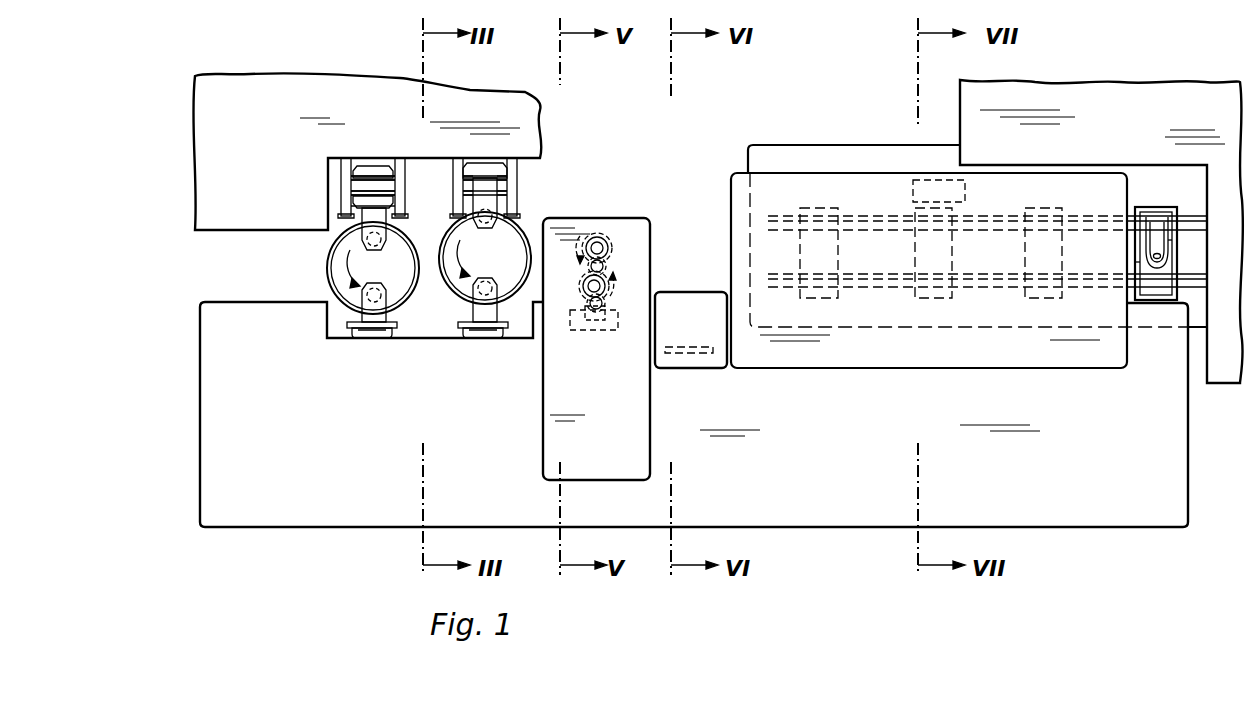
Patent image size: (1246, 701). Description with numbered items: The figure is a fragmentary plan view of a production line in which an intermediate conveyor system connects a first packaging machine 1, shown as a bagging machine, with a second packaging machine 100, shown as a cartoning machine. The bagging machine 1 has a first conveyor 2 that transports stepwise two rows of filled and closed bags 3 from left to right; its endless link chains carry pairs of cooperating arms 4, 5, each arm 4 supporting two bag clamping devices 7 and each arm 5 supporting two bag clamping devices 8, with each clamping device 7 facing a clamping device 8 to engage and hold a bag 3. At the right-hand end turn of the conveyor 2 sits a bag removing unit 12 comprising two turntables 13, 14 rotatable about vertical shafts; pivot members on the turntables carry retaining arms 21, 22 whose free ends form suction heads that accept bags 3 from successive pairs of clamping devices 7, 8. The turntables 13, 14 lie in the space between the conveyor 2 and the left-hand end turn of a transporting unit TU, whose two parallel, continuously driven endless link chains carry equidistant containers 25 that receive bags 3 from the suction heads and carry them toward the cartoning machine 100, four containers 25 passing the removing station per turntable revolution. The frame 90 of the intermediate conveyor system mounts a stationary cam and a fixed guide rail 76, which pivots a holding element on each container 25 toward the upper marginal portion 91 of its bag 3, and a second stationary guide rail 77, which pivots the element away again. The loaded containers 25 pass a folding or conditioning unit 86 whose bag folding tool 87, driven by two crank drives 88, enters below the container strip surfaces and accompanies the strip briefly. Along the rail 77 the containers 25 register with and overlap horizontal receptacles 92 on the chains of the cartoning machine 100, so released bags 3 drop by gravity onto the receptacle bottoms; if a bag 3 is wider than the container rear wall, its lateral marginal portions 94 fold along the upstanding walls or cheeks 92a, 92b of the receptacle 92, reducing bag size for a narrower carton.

The first packaging machine 1 is at (523, 117).
The first conveyor 2 is at (556, 178).
The bag 3 is at (483, 168).
The arm 4 is at (512, 200).
The arm 5 is at (456, 192).
The bag clamping device 7 is at (510, 174).
The bag clamping device 8 is at (455, 176).
The bag removing unit 12 is at (312, 257).
The turntable 13 is at (333, 278).
The turntable 14 is at (530, 232).
The retaining arm 21 is at (384, 315).
The retaining arm 22 is at (478, 308).
The container 25 is at (340, 346).
The guide rail 76 is at (688, 356).
The second stationary guide rail 77 is at (957, 202).
The folding or conditioning unit 86 is at (646, 206).
The bag folding tool 87 is at (578, 330).
The crank drive 88 is at (609, 271).
The frame 90 is at (853, 463).
The upper marginal portion 91 is at (1135, 218).
The receptacle 92 is at (915, 290).
The upstanding wall 92a is at (1137, 262).
The upstanding wall 92b is at (1170, 260).
The lateral marginal portion 94 is at (1155, 230).
The second packaging machine 100 is at (927, 155).
The transporting unit TU is at (505, 400).